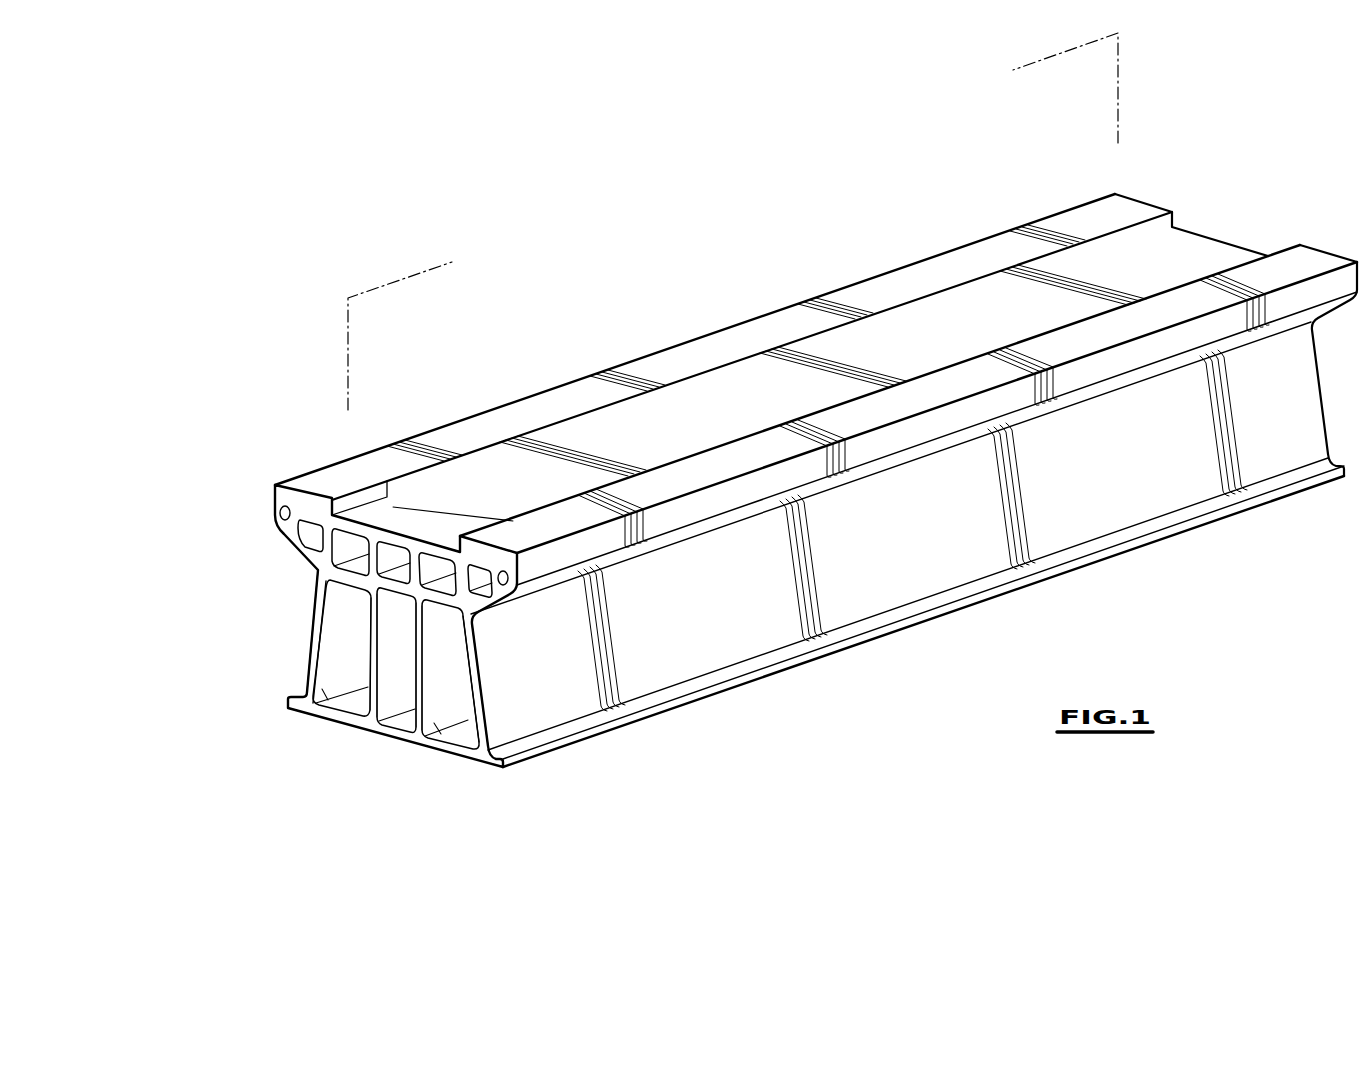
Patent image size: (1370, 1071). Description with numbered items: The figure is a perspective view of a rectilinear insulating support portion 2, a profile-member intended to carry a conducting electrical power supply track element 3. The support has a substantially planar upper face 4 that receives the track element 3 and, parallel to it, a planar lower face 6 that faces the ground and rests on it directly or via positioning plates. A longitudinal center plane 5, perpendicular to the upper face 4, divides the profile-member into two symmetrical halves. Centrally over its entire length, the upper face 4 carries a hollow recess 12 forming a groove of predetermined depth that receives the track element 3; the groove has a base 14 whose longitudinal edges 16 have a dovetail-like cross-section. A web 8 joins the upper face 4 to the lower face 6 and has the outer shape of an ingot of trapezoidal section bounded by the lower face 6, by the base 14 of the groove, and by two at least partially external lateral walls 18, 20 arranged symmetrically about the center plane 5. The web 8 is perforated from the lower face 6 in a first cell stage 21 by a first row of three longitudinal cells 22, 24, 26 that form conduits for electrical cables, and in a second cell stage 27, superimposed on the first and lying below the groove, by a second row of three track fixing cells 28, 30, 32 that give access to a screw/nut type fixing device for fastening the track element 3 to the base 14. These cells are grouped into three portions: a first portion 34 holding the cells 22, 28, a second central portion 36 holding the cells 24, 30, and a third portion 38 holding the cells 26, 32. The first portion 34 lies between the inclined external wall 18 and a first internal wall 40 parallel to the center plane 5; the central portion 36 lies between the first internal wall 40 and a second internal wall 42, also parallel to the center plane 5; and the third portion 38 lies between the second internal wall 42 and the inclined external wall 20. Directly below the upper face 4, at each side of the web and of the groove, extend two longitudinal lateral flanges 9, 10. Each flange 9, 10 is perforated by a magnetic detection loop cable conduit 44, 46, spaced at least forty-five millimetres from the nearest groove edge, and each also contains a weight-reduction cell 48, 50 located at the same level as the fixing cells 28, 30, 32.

The insulating support portion 2 is at (690, 316).
The electrical power supply track element 3 is at (900, 305).
The upper face 4 is at (1085, 215).
The longitudinal center plane 5 is at (356, 318).
The lower face 6 is at (404, 750).
The web 8 is at (301, 626).
The lateral flange 9 is at (280, 495).
The lateral flange 10 is at (512, 565).
The hollow recess 12 is at (357, 506).
The base 14 is at (393, 507).
The longitudinal edges 16 is at (279, 518).
The lateral wall 18 is at (307, 660).
The lateral wall 20 is at (480, 686).
The first cell stage 21 is at (449, 659).
The longitudinal cell 22 is at (312, 710).
The longitudinal cell 24 is at (390, 707).
The longitudinal cell 26 is at (457, 733).
The second cell stage 27 is at (493, 543).
The track fixing cell 28 is at (347, 562).
The track fixing cell 30 is at (393, 553).
The track fixing cell 32 is at (435, 563).
The first portion 34 is at (330, 674).
The second central portion 36 is at (384, 687).
The third portion 38 is at (434, 698).
The first internal wall 40 is at (326, 690).
The second internal wall 42 is at (419, 708).
The magnetic detection loop cable conduit 44 is at (296, 534).
The magnetic detection loop cable conduit 46 is at (510, 582).
The weight-reduction cell 48 is at (310, 538).
The weight-reduction cell 50 is at (481, 586).